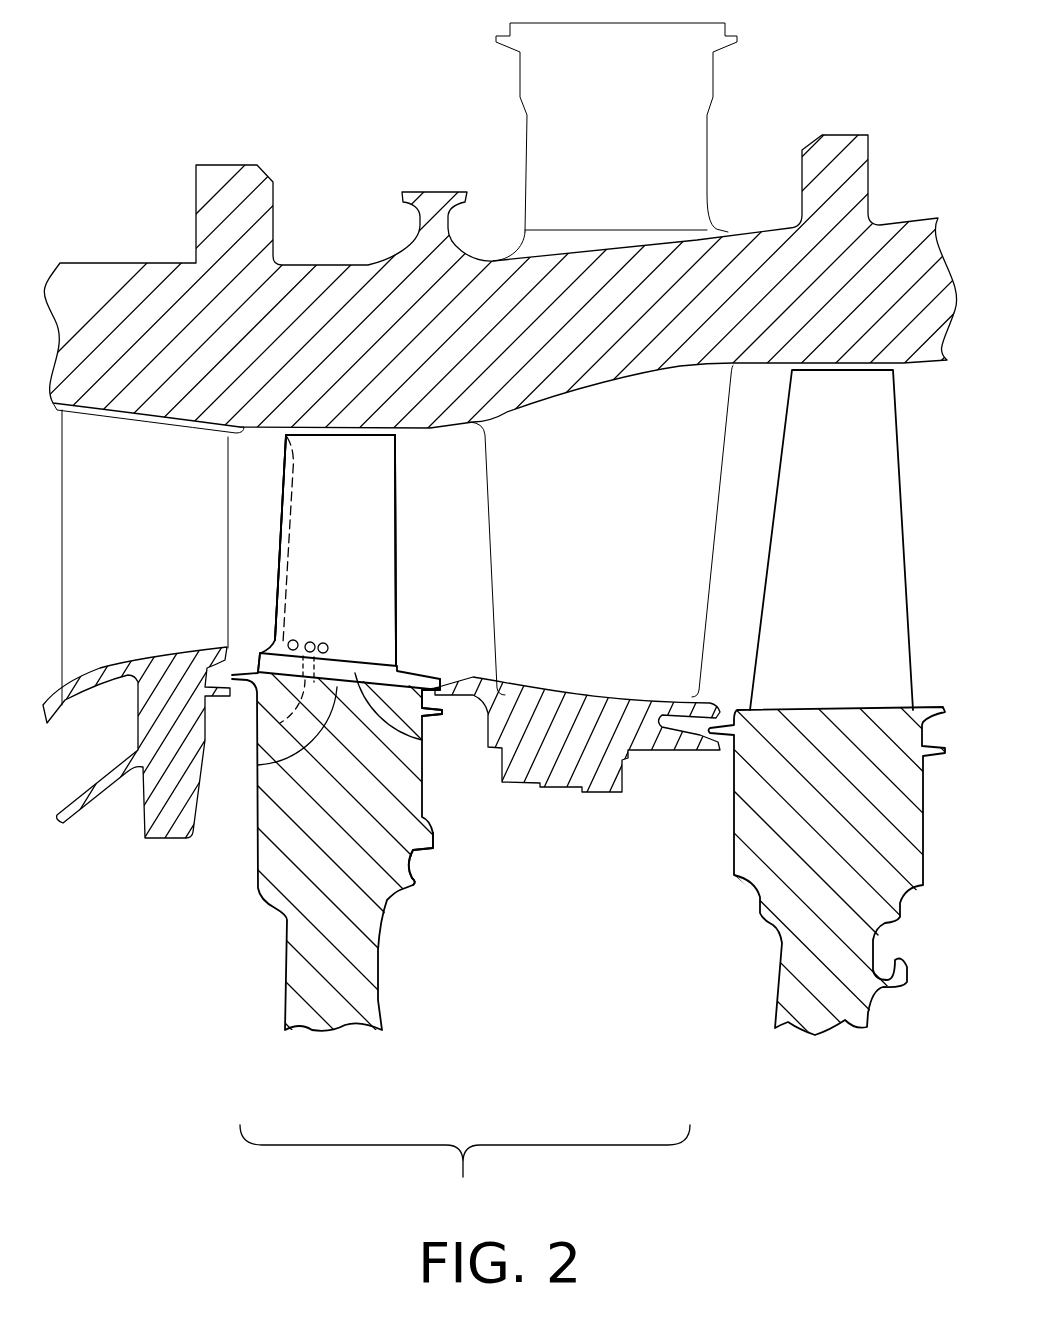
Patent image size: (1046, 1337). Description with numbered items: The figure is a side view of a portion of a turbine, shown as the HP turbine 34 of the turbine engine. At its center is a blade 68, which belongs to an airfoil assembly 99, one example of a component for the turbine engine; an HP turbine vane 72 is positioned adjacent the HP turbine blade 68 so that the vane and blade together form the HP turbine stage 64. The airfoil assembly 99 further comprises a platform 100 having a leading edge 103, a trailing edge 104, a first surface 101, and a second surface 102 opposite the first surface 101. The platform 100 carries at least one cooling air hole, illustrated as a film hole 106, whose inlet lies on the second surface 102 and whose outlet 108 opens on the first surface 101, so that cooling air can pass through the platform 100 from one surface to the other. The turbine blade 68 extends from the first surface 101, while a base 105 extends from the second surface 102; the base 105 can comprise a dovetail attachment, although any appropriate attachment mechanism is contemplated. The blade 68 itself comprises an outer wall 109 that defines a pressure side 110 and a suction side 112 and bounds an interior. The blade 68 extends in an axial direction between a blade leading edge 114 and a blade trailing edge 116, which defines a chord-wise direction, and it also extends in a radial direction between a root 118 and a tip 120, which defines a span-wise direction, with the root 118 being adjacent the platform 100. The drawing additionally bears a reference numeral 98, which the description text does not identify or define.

The HP turbine 34 is at (272, 65).
The HP turbine stage 64 is at (463, 1177).
The turbine blade 68 is at (360, 493).
The HP turbine vane 72 is at (622, 427).
The forward direction 98 is at (320, 1060).
The airfoil assembly 99 is at (380, 1062).
The platform 100 is at (258, 765).
The first surface 101 is at (357, 656).
The second surface 102 is at (421, 740).
The leading edge 103 is at (261, 653).
The trailing edge 104 is at (440, 680).
The base 105 is at (335, 884).
The film hole 106 is at (272, 722).
The outlet 108 is at (294, 640).
The outer wall 109 is at (438, 550).
The pressure side 110 is at (363, 535).
The suction side 112 is at (288, 528).
The blade leading edge 114 is at (283, 462).
The blade trailing edge 116 is at (396, 494).
The root 118 is at (382, 651).
The tip 120 is at (383, 455).